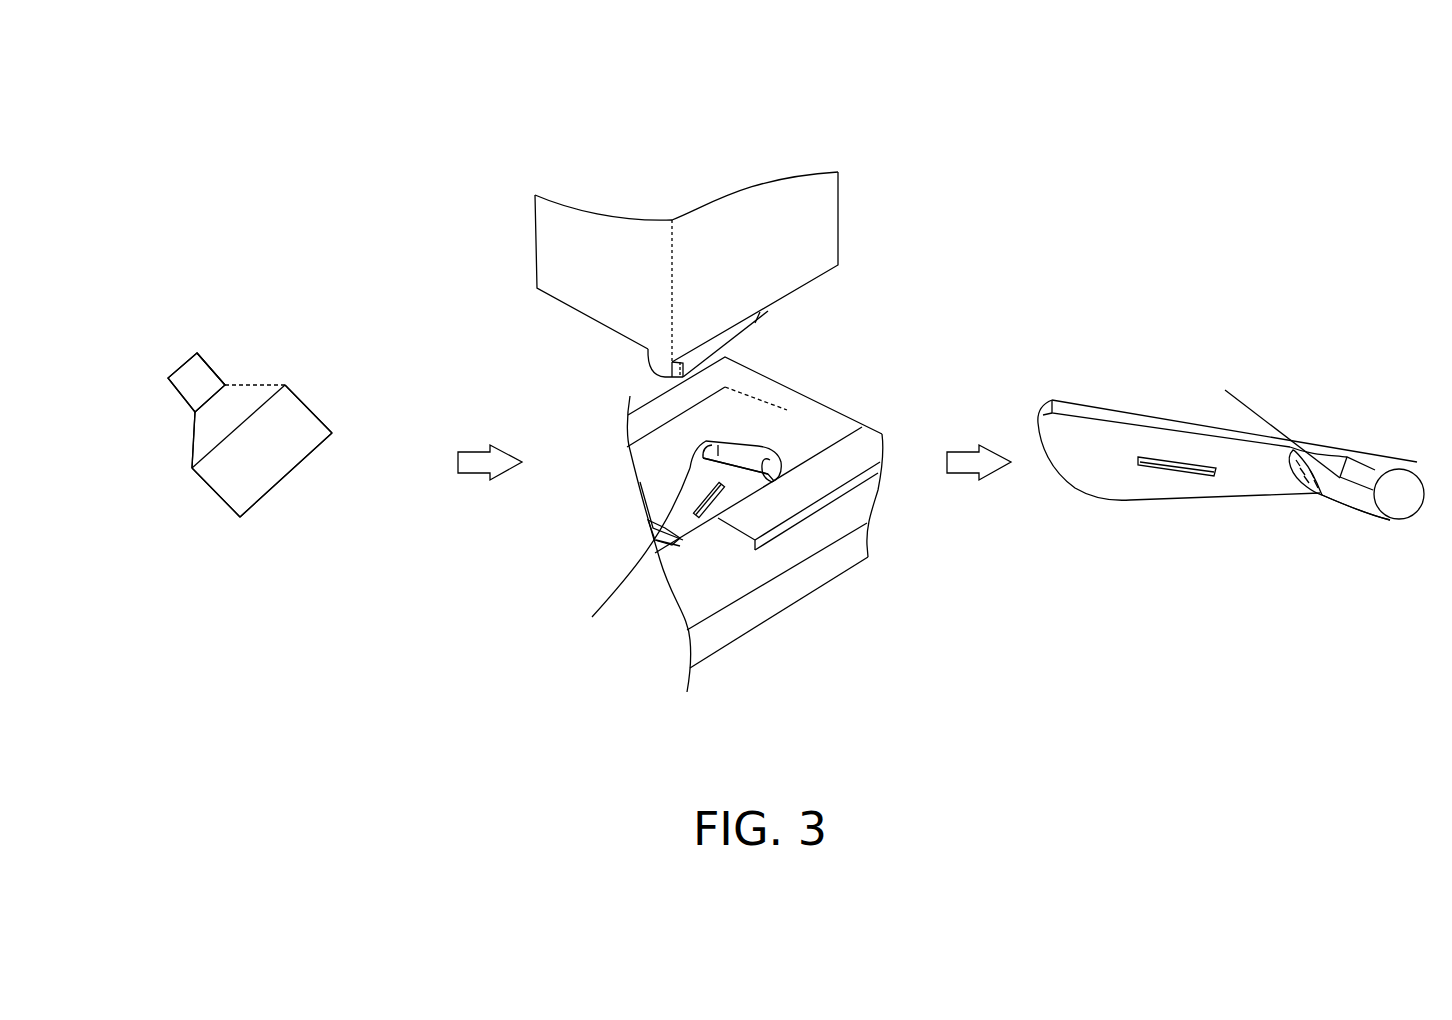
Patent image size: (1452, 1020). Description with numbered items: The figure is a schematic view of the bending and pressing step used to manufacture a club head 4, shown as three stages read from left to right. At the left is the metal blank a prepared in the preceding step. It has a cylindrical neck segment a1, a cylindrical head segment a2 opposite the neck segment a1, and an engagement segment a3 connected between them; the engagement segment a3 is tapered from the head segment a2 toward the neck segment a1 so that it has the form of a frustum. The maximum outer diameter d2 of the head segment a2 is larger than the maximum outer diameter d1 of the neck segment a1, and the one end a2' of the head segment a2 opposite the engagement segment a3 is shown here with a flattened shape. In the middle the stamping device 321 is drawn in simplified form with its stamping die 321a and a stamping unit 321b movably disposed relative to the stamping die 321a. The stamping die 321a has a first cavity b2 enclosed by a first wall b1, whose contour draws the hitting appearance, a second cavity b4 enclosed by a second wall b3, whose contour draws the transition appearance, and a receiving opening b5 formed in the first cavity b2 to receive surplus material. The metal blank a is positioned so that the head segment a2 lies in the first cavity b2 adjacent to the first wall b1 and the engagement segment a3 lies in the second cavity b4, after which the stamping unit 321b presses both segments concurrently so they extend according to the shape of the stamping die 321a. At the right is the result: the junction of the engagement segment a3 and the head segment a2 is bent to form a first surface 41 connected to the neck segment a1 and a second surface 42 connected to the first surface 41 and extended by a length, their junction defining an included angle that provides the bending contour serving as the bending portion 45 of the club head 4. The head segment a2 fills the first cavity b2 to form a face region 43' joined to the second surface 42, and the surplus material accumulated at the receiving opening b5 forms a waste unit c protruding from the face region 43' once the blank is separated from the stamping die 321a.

The metal blank a is at (181, 319).
The neck segment a1 is at (192, 382).
The head segment a2 is at (219, 540).
The one end of the head segment a2' is at (311, 495).
The engagement segment a3 is at (193, 440).
The maximum outer diameter of the neck segment d1 is at (212, 364).
The maximum outer diameter of the head segment d2 is at (314, 407).
The stamping device 321 is at (717, 390).
The stamping die 321a is at (792, 600).
The stamping unit 321b is at (827, 217).
The first wall b1 is at (763, 450).
The first cavity b2 is at (738, 472).
The second wall b3 is at (631, 562).
The second cavity b4 is at (659, 530).
The receiving opening b5 is at (705, 515).
The club head 4 is at (1244, 412).
The first surface 41 is at (1265, 419).
The second surface 42 is at (1370, 483).
The face region 43' is at (1227, 489).
The bending portion 45 is at (1297, 496).
The waste unit c is at (1170, 470).